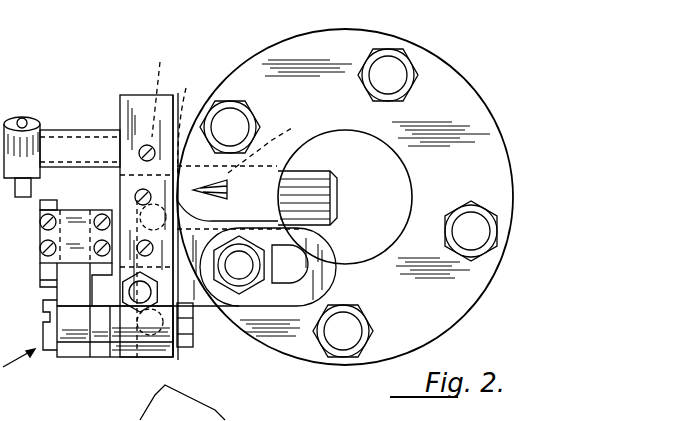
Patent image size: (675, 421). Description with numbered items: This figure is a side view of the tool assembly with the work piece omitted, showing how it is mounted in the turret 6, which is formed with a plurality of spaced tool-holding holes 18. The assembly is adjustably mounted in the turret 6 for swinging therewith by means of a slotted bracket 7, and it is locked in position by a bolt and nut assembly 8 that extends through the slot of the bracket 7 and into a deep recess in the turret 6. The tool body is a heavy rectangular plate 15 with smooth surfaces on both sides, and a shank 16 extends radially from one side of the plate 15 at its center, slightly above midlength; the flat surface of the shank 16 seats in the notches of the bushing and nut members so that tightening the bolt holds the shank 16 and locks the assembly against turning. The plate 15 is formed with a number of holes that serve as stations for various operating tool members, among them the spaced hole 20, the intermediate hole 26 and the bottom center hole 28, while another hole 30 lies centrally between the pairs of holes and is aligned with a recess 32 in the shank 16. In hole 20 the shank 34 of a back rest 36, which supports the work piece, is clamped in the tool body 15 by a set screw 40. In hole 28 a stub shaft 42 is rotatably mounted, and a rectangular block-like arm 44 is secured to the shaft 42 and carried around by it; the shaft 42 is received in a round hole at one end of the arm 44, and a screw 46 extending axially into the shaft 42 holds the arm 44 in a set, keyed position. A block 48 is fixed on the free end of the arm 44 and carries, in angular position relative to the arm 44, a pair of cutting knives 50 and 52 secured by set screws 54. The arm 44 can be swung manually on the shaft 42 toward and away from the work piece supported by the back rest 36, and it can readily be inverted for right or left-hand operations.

The turret 6 is at (277, 44).
The slotted bracket 7 is at (313, 290).
The bolt and nut assembly 8 is at (238, 258).
The rectangular plate 15 is at (120, 108).
The shank 16 is at (337, 189).
The tool-holding holes 18 is at (300, 136).
The hole 20 is at (192, 123).
The intermediate hole 26 is at (197, 323).
The bottom center hole 28 is at (136, 342).
The hole 30 is at (177, 102).
The recess 32 is at (260, 146).
The shank of back rest 34 is at (63, 128).
The back rest 36 is at (44, 174).
The set screw 40 is at (143, 145).
The stub shaft 42 is at (70, 346).
The block-like arm 44 is at (67, 301).
The screw 46 is at (55, 324).
The block 48 is at (78, 253).
The cutting knife 50 is at (40, 204).
The cutting knife 52 is at (108, 312).
The set screws 54 is at (40, 222).